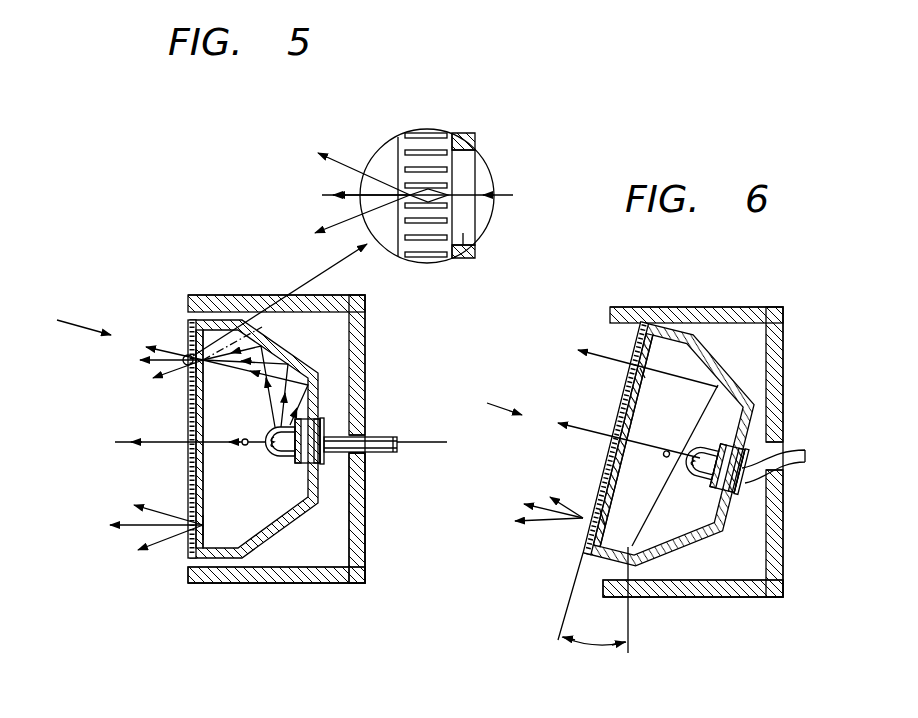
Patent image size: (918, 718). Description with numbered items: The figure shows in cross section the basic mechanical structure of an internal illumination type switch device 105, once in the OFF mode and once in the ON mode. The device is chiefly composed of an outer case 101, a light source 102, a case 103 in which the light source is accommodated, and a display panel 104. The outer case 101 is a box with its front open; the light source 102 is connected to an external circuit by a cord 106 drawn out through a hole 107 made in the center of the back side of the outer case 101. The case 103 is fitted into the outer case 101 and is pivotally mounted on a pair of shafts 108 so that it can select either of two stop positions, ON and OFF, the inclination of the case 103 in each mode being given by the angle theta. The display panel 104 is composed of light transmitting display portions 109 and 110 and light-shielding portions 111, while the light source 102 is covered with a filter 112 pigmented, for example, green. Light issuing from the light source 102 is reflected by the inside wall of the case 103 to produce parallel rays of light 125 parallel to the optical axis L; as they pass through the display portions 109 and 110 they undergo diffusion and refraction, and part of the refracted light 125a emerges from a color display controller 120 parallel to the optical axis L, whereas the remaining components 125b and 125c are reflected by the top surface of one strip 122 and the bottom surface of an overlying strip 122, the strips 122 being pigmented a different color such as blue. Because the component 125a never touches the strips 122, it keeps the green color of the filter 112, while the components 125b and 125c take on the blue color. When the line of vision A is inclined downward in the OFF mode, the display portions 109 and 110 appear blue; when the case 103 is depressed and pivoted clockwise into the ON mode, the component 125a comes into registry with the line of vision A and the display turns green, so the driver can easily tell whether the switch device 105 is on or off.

In FIG. 5, the outer case 101 is at (366, 362).
In FIG. 6, the outer case 101 is at (764, 307).
In FIG. 5, the light source 102 is at (300, 463).
In FIG. 6, the light source 102 is at (700, 488).
In FIG. 5, the case 103 is at (276, 534).
In FIG. 6, the case 103 is at (673, 545).
In FIG. 5, the display panel 104 is at (272, 520).
In FIG. 6, the display panel 104 is at (614, 492).
In FIG. 5, the internal illumination type switch device 105 is at (369, 328).
In FIG. 6, the internal illumination type switch device 105 is at (789, 337).
In FIG. 5, the cord 106 is at (380, 437).
In FIG. 6, the cord 106 is at (797, 448).
In FIG. 5, the hole 107 is at (366, 454).
In FIG. 6, the hole 107 is at (778, 471).
In FIG. 5, the shafts 108 is at (233, 436).
In FIG. 5, the light transmitting display portion 109 is at (205, 364).
In FIG. 6, the light transmitting display portion 109 is at (640, 373).
In FIG. 5, the light transmitting display portion 110 is at (206, 525).
In FIG. 6, the light transmitting display portion 110 is at (602, 516).
In FIG. 5, the light-shielding portions 111 is at (203, 460).
In FIG. 6, the light-shielding portions 111 is at (628, 420).
In FIG. 5, the filter 112 is at (363, 540).
In FIG. 6, the filter 112 is at (697, 452).
In FIG. 5, the color display controller 120 is at (187, 480).
In FIG. 6, the color display controller 120 is at (611, 405).
In FIG. 5, the strips 122 is at (403, 170).
In FIG. 5, the parallel rays of light 125 is at (292, 372).
In FIG. 5, the refracted light component 125a is at (130, 360).
In FIG. 6, the refracted light component 125a is at (526, 506).
In FIG. 5, the refracted light component 125b is at (155, 345).
In FIG. 6, the refracted light component 125b is at (555, 496).
In FIG. 5, the refracted light component 125c is at (152, 378).
In FIG. 6, the refracted light component 125c is at (534, 523).
In FIG. 5, the line of vision A is at (89, 318).
In FIG. 6, the line of vision A is at (503, 400).
In FIG. 5, the optical axis L is at (437, 447).
In FIG. 6, the angle theta is at (593, 606).